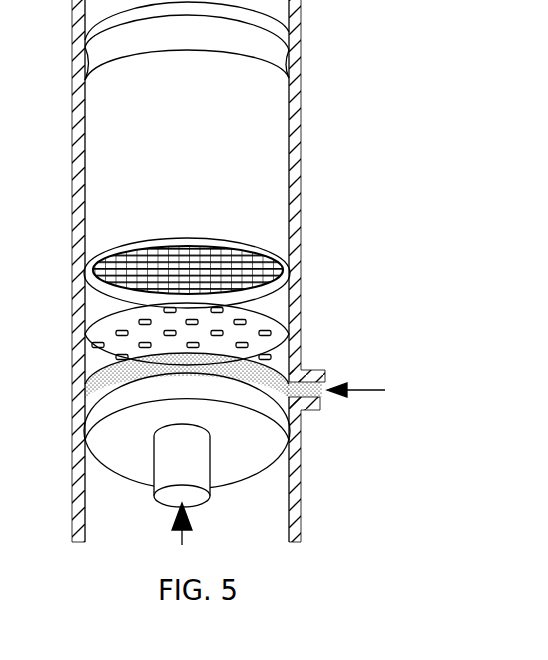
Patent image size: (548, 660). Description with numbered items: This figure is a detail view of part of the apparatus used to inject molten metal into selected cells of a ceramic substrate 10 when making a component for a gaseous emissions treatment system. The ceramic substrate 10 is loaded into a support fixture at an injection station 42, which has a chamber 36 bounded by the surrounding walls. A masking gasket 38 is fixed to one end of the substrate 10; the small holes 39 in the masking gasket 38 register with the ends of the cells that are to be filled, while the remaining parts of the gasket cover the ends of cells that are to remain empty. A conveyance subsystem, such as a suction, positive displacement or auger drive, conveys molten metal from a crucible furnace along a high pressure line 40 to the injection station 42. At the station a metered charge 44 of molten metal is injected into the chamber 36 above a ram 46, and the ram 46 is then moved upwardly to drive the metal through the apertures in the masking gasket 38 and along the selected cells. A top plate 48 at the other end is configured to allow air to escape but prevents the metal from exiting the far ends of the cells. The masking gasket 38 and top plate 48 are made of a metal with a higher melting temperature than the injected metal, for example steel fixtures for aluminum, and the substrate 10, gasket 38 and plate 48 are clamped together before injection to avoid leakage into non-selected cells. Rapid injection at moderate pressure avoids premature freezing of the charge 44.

The ceramic substrate 10 is at (210, 278).
The chamber 36 is at (300, 214).
The masking gasket 38 is at (280, 318).
The holes 39 is at (115, 340).
The high pressure line 40 is at (180, 538).
The injection station 42 is at (359, 241).
The metered charge 44 is at (262, 369).
The ram 46 is at (115, 445).
The top plate 48 is at (267, 23).